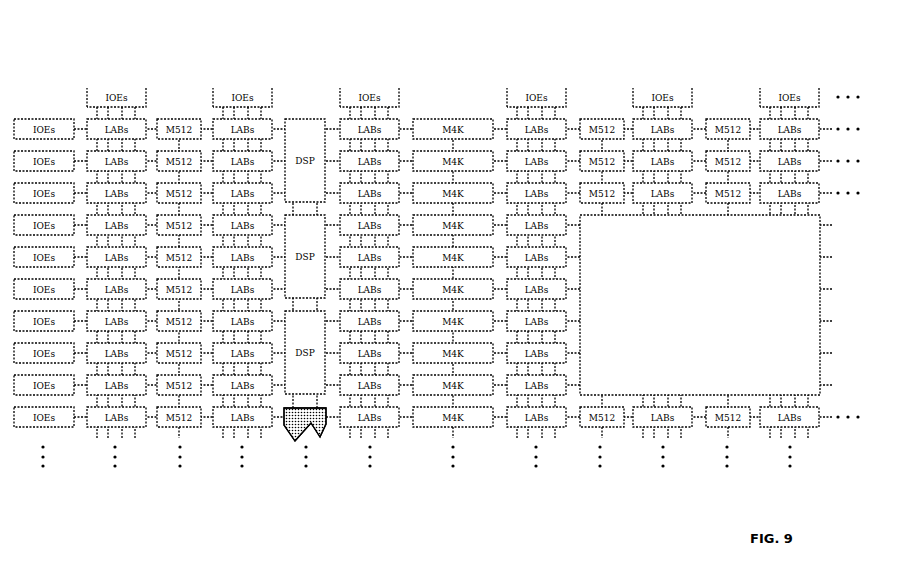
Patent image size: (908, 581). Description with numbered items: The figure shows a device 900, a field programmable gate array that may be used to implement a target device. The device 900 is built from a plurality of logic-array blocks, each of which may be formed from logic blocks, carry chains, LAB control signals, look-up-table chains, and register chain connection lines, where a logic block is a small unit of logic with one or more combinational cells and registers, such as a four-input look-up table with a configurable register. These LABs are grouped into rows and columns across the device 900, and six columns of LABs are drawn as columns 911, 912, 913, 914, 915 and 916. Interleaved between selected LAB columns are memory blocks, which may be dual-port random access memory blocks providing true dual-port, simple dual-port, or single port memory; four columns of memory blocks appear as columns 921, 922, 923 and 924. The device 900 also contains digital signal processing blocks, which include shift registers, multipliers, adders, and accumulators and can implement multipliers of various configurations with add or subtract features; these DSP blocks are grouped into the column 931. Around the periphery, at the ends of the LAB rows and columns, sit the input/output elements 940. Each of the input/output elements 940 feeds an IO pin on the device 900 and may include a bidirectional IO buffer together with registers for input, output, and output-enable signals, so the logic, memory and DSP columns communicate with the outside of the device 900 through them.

The device 900 is at (437, 247).
The column of LABs 911 is at (108, 448).
The column of LABs 912 is at (235, 448).
The column of LABs 913 is at (360, 448).
The column of LABs 914 is at (518, 448).
The column of LABs 915 is at (650, 448).
The column of LABs 916 is at (777, 448).
The column of memory blocks 921 is at (192, 113).
The column of memory blocks 922 is at (455, 113).
The column of memory blocks 923 is at (605, 113).
The column of memory blocks 924 is at (730, 113).
The column of DSP blocks 931 is at (313, 112).
The input/output elements 940 is at (82, 100).